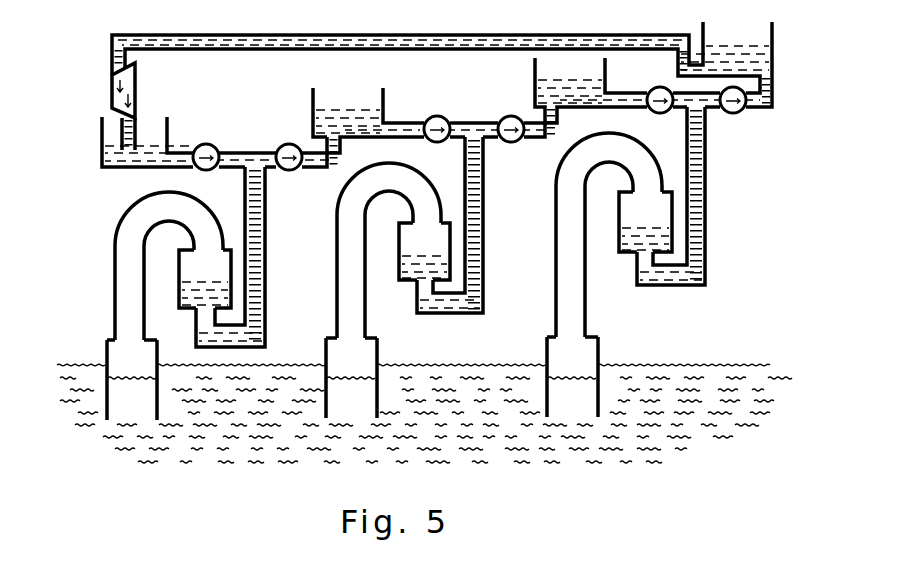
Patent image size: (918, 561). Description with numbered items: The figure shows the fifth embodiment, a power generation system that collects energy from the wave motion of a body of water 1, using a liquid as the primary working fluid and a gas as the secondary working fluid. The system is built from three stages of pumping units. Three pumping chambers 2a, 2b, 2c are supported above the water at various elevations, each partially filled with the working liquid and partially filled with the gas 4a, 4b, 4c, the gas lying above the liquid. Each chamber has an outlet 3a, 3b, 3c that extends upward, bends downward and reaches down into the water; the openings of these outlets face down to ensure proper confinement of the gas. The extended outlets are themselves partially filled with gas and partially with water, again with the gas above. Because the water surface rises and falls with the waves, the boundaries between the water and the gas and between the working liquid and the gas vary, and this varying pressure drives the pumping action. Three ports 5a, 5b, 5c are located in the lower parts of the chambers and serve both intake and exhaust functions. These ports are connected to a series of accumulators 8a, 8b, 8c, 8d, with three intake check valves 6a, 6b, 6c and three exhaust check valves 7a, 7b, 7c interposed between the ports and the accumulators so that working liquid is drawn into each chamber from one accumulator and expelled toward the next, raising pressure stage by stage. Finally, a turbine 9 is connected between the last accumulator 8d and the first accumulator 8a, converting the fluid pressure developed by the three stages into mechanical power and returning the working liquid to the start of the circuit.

The body of water 1 is at (424, 413).
The pumping chamber 2a is at (205, 279).
The pumping chamber 2b is at (424, 251).
The pumping chamber 2c is at (645, 222).
The outlet 3a is at (132, 380).
The outlet 3b is at (351, 378).
The outlet 3c is at (572, 377).
The gas 4a is at (165, 266).
The gas 4b is at (383, 250).
The gas 4c is at (604, 235).
The port 5a is at (206, 313).
The port 5b is at (427, 283).
The port 5c is at (647, 254).
The intake check valve 6a is at (214, 146).
The intake check valve 6b is at (444, 117).
The intake check valve 6c is at (655, 112).
The exhaust check valve 7a is at (287, 144).
The exhaust check valve 7b is at (508, 116).
The exhaust check valve 7c is at (738, 113).
The accumulator 8a is at (169, 128).
The accumulator 8b is at (384, 112).
The accumulator 8c is at (606, 87).
The accumulator 8d is at (773, 62).
The turbine 9 is at (117, 93).